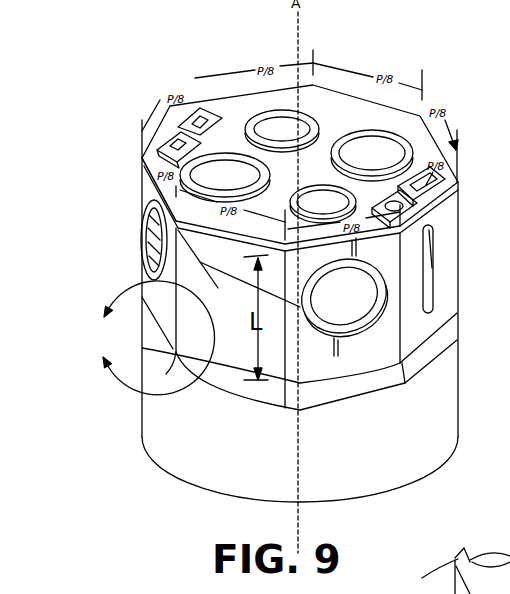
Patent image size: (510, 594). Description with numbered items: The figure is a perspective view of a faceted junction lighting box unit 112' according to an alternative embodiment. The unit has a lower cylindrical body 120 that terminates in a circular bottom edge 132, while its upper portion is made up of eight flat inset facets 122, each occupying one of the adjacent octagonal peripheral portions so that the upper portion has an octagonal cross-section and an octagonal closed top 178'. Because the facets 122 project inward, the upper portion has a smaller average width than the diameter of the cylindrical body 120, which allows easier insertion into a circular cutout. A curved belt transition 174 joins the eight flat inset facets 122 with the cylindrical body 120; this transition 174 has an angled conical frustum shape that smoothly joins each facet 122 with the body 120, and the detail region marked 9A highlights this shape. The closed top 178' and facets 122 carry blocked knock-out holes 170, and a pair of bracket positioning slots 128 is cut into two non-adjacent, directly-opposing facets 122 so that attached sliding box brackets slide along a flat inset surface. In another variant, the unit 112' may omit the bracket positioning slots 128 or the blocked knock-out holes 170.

The blocked knock-out holes 170 is at (366, 148).
The octagonal closed top 178' is at (300, 140).
The junction lighting box unit 112' is at (367, 57).
The bracket positioning slots 128 is at (436, 232).
The flat inset facets 122 is at (180, 218).
The section view indicator 9A is at (149, 338).
The curved belt transition 174 is at (155, 347).
The cylindrical body 120 is at (177, 425).
The circular bottom edge 132 is at (157, 462).